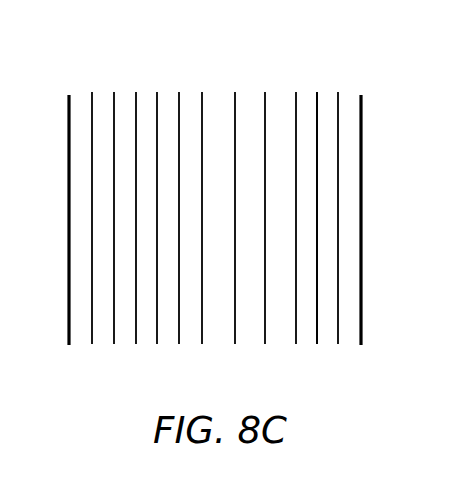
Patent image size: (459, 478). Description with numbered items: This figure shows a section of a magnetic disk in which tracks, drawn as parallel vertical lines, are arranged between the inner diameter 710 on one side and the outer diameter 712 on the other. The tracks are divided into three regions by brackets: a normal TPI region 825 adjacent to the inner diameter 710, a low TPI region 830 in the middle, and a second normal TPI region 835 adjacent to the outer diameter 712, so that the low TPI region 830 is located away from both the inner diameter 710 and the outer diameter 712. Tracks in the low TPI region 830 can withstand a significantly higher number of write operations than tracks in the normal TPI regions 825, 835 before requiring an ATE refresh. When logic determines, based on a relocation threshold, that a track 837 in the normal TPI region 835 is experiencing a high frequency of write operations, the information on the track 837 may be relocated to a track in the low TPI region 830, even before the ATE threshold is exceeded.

The inner diameter 710 is at (67, 238).
The outer diameter 712 is at (365, 200).
The normal TPI region 825 is at (202, 93).
The low TPI region 830 is at (296, 93).
The normal TPI region 835 is at (337, 93).
The track 837 is at (317, 335).